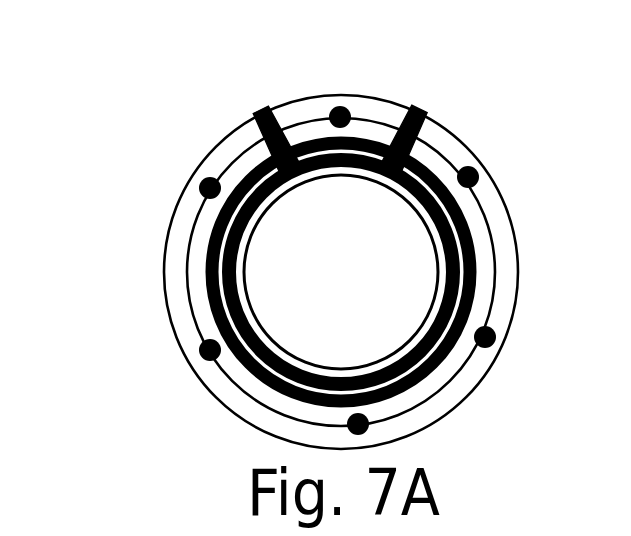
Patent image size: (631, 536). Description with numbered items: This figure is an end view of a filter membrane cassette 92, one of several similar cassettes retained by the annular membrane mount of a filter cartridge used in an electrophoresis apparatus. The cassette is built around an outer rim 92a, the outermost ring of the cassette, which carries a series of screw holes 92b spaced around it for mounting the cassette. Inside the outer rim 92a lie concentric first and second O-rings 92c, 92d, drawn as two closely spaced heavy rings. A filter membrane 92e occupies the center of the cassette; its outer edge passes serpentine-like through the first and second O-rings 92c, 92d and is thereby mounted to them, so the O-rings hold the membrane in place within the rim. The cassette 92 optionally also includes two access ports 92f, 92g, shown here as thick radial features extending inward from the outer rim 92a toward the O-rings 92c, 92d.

The filter membrane cassette 92 is at (205, 109).
The outer rim 92a is at (496, 173).
The screw holes 92b is at (193, 328).
The first O-ring 92c is at (492, 222).
The second O-ring 92d is at (481, 236).
The filter membrane 92e is at (374, 289).
The access port 92f is at (261, 102).
The access port 92g is at (418, 104).